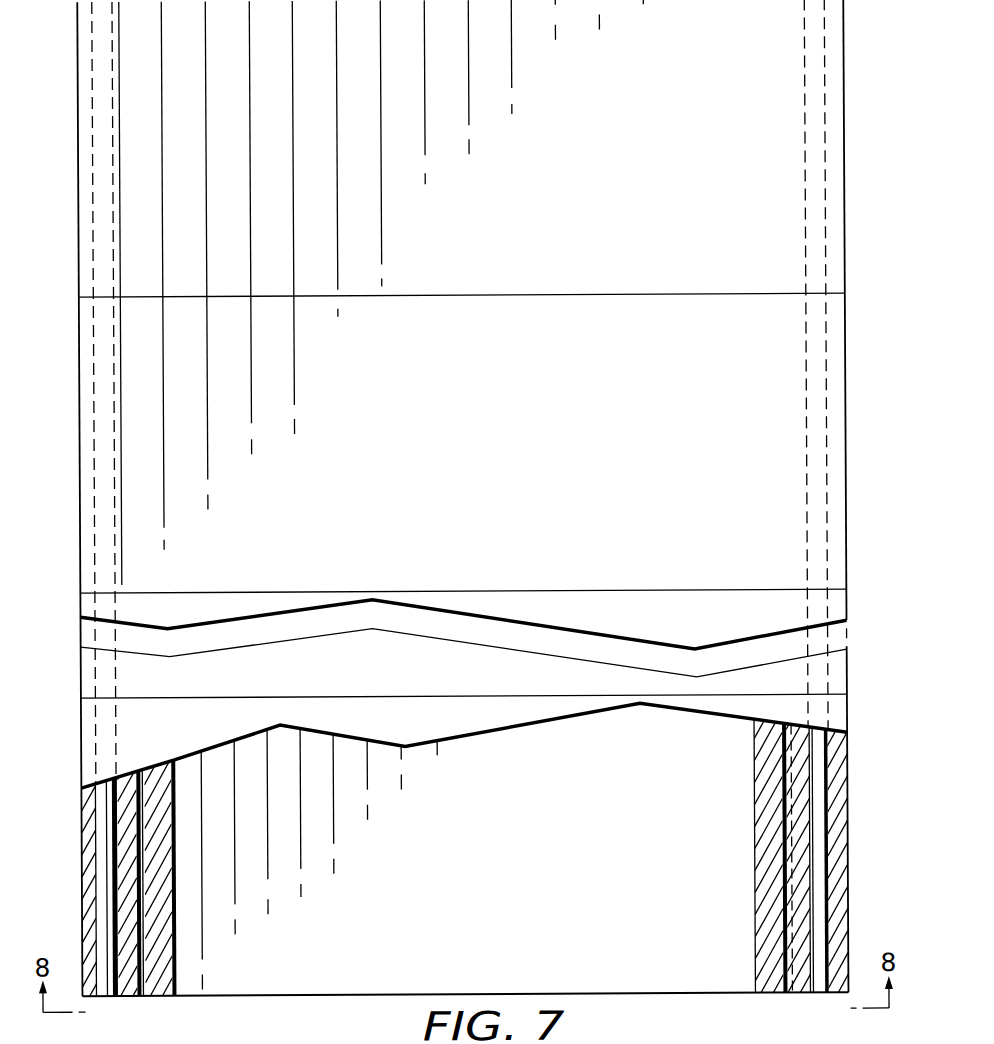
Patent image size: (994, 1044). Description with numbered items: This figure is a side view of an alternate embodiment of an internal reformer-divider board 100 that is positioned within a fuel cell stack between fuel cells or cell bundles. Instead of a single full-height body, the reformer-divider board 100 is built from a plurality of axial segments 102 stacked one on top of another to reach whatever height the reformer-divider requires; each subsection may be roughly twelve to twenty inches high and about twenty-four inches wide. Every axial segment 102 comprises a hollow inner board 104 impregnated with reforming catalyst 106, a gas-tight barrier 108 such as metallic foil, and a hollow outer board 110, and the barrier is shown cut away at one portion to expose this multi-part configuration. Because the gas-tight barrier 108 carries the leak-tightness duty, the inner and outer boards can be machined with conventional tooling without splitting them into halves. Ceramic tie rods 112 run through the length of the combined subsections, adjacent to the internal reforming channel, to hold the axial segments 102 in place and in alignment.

The reformer-divider board 100 is at (33, 860).
The axial segment 102 is at (80, 38).
The hollow inner board 104 is at (774, 760).
The reforming catalyst 106 is at (790, 792).
The gas-tight barrier 108 is at (795, 832).
The hollow outer board 110 is at (845, 864).
The ceramic tie rod 112 is at (94, 178).